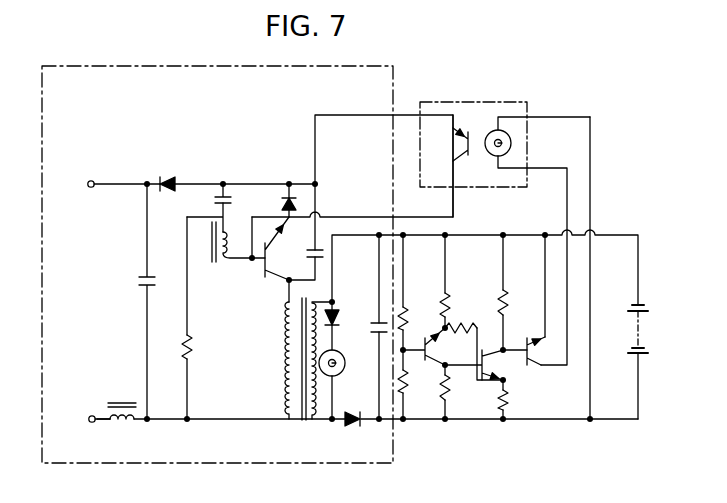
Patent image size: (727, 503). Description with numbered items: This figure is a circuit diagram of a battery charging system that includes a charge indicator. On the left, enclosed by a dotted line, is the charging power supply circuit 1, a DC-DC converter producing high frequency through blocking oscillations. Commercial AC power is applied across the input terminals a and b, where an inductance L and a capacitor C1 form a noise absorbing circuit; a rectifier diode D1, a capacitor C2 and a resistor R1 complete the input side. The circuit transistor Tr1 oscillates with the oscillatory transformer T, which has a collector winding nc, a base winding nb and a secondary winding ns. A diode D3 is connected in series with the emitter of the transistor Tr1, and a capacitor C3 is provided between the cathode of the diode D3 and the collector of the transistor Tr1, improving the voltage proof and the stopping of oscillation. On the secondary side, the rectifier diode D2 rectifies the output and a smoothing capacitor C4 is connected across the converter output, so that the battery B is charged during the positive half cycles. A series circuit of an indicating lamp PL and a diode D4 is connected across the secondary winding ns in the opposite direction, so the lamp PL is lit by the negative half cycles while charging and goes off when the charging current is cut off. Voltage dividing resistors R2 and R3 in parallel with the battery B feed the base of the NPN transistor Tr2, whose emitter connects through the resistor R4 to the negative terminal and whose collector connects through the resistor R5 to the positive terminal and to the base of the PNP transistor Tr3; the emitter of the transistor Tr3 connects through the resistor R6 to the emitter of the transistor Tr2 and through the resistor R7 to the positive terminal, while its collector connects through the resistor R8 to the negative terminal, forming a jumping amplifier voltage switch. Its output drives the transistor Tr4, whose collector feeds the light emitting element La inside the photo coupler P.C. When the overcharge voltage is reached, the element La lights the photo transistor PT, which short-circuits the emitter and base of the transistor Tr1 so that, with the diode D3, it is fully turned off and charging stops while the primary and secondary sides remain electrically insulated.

The high-frequency power supply circuit 1 is at (224, 463).
The input terminal a is at (116, 185).
The input terminal b is at (90, 422).
The rectifier diode D1 is at (166, 177).
The rectifier diode D2 is at (353, 428).
The diode D3 is at (281, 206).
The diode D4 is at (340, 328).
The capacitor C1 is at (156, 283).
The capacitor C2 is at (213, 200).
The capacitor C3 is at (324, 256).
The smoothing capacitor C4 is at (373, 323).
The resistor R1 is at (190, 341).
The voltage dividing resistor R2 is at (408, 317).
The voltage dividing resistor R3 is at (407, 381).
The resistor R4 is at (448, 318).
The resistor R5 is at (448, 393).
The resistor R6 is at (477, 316).
The resistor R7 is at (507, 398).
The resistor R8 is at (504, 320).
The circuit transistor Tr1 is at (268, 262).
The NPN transistor Tr2 is at (430, 353).
The PNP transistor Tr3 is at (486, 375).
The output stage transistor Tr4 is at (530, 352).
The base winding nb is at (232, 255).
The collector winding nc is at (282, 372).
The secondary winding ns is at (315, 420).
The oscillatory transformer T is at (293, 423).
The inductance L is at (120, 424).
The indicating lamp PL is at (345, 367).
The photo coupler P.C is at (447, 102).
The photoelectric conversion element PT is at (460, 143).
The light emitting element La is at (512, 145).
The battery B is at (645, 329).